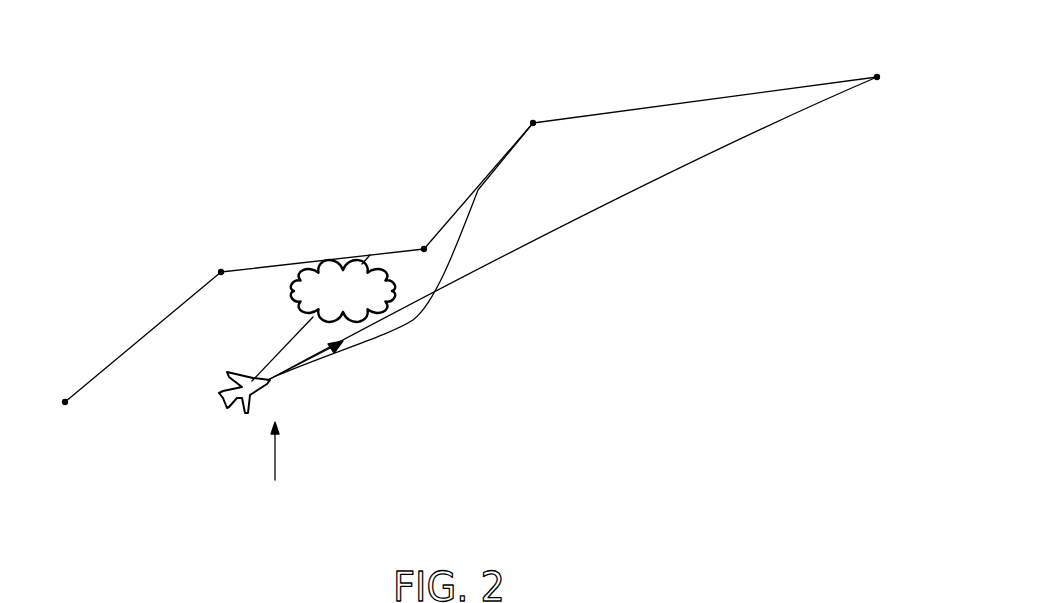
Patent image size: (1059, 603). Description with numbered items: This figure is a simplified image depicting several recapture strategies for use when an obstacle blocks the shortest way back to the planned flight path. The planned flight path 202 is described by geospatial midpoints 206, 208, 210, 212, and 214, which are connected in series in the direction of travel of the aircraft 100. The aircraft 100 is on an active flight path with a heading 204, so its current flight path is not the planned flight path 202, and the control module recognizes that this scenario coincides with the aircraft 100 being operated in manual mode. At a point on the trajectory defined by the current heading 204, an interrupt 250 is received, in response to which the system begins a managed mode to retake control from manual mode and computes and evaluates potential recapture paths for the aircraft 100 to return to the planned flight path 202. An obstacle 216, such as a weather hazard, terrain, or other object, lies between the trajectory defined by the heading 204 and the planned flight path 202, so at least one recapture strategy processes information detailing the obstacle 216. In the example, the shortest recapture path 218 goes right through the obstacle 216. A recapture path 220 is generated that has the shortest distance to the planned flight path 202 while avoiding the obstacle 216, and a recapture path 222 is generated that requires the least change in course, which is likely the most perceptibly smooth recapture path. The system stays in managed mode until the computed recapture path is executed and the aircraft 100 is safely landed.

The aircraft 100 is at (245, 415).
The planned flight path 202 is at (333, 257).
The heading 204 is at (315, 357).
The geospatial midpoint 206 is at (65, 402).
The geospatial midpoint 208 is at (221, 272).
The geospatial midpoint 210 is at (424, 249).
The geospatial midpoint 212 is at (533, 123).
The geospatial midpoint 214 is at (877, 77).
The obstacle 216 is at (291, 296).
The shortest recapture path 218 is at (274, 356).
The recapture path 220 is at (413, 321).
The recapture path 222 is at (646, 184).
The interrupt 250 is at (276, 456).